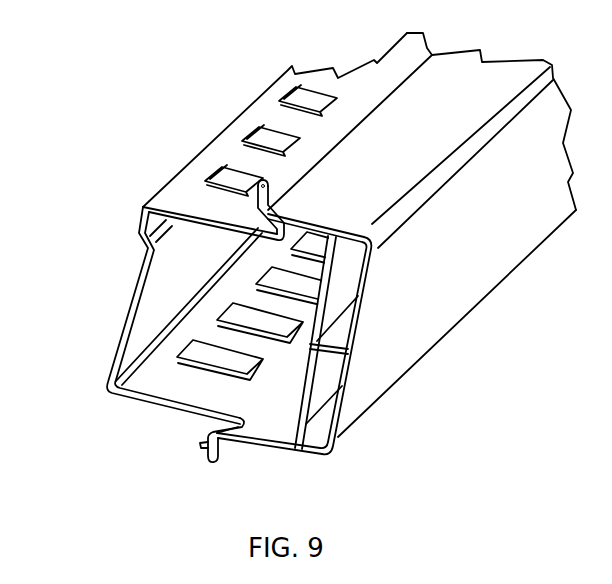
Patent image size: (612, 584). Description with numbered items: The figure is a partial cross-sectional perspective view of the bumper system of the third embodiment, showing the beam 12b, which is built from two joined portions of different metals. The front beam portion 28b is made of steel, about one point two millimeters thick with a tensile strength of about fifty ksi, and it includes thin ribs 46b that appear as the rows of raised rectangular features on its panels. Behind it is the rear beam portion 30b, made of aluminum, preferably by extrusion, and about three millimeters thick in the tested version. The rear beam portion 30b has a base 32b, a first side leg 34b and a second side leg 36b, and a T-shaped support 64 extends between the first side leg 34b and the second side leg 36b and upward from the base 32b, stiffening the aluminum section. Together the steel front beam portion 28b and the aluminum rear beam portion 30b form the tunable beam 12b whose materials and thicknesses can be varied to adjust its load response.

The beam 12b is at (146, 139).
The thin ribs 46b is at (258, 136).
The front beam portion 28b is at (127, 293).
The first side leg 34b is at (250, 447).
The T-shaped support 64 is at (318, 458).
The rear beam portion 30b is at (377, 431).
The second side leg 36b is at (491, 66).
The base 32b is at (466, 318).